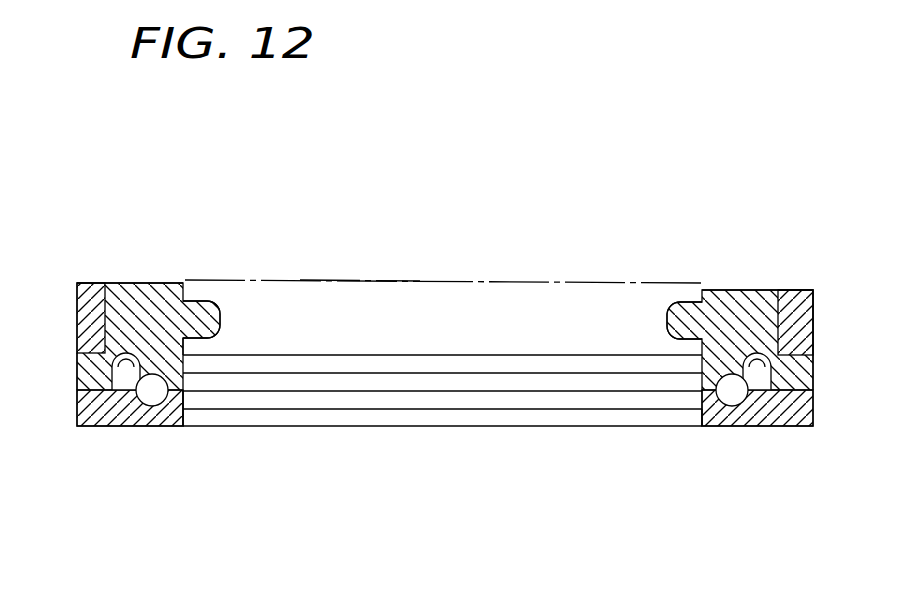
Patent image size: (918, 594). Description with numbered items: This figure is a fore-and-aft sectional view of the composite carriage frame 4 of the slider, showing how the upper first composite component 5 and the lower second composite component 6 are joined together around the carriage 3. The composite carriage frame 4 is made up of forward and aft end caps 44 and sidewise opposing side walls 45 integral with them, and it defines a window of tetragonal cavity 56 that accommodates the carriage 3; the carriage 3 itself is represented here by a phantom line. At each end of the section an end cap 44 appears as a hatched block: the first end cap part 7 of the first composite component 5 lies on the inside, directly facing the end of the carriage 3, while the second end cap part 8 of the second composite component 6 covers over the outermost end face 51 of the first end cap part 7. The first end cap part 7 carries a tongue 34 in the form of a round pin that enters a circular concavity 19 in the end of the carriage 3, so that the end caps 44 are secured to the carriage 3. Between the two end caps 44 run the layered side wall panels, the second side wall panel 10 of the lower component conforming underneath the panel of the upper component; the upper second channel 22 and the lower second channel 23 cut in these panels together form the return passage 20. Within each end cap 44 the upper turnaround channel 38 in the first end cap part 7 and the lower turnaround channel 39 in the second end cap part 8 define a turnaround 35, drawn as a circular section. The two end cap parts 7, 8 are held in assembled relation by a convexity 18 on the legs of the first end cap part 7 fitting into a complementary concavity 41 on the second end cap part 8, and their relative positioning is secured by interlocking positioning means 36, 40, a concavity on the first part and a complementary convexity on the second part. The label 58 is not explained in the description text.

The carriage 3 is at (355, 302).
The composite carriage frame 4 is at (522, 278).
The upper first composite component 5 is at (726, 289).
The lower second composite component 6 is at (808, 289).
The first end cap part 7 is at (148, 315).
The second end cap part 8 is at (88, 313).
The second side wall panel 10 is at (397, 418).
The convexity 18 is at (92, 393).
The concavity 19 is at (200, 300).
The return passage 20 is at (480, 402).
The upper second channel 22 is at (353, 383).
The lower second channel 23 is at (442, 402).
The tongue 34 is at (209, 300).
The turnaround 35 is at (157, 405).
The positioning means 36 is at (150, 347).
The upper turnaround channel 38 is at (183, 353).
The lower turnaround channel 39 is at (145, 400).
The positioning means 40 is at (118, 358).
The concavity 41 is at (86, 356).
The end cap 44 is at (133, 280).
The side wall 45 is at (310, 430).
The end face 51 is at (93, 282).
The cavity 56 is at (548, 355).
The plate interface 58 is at (558, 393).